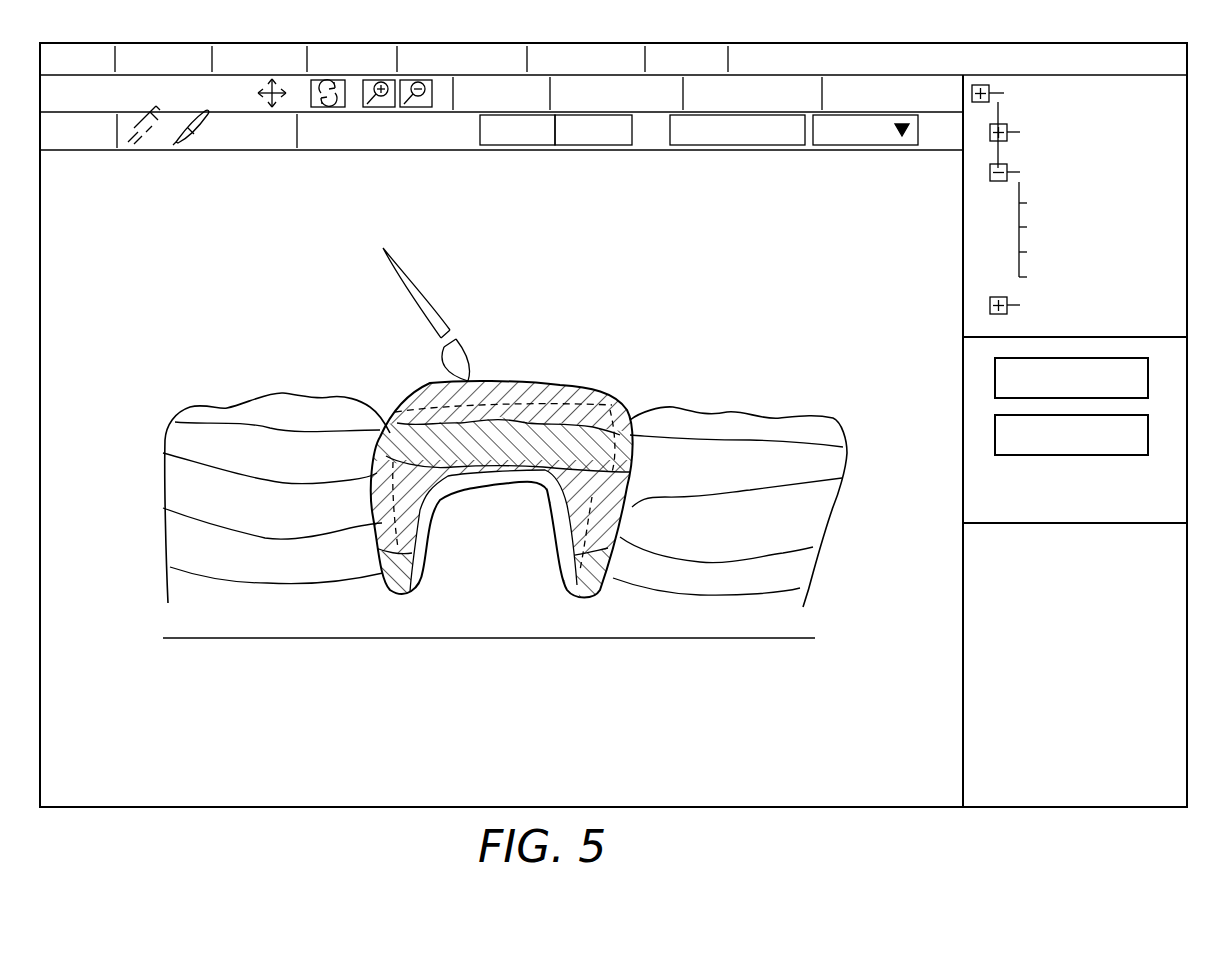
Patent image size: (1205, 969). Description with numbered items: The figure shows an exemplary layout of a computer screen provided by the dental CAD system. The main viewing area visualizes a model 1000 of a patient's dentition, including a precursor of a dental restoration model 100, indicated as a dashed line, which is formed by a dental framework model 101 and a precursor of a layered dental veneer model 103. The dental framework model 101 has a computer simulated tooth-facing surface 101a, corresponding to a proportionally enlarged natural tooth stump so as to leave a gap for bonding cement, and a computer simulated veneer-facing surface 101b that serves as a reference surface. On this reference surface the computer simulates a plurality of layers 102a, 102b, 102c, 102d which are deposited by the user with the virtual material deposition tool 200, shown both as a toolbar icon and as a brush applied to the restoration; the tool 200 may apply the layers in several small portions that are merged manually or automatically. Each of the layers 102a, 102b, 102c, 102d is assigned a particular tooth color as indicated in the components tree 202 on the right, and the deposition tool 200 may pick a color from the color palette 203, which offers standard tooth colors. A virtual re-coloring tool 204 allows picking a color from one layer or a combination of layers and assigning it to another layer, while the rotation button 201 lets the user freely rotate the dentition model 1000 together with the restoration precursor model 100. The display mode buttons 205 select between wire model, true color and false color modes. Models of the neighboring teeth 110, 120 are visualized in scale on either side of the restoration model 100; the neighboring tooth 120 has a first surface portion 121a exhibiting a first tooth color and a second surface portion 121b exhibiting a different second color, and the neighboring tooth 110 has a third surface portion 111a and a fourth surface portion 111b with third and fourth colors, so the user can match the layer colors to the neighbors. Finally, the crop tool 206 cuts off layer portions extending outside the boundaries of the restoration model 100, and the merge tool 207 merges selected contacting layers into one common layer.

The model of a patient's dentition 1000 is at (247, 612).
The dental restoration model 100 is at (553, 478).
The dental framework model 101 is at (562, 574).
The computer simulated tooth-facing surface 101a is at (428, 568).
The computer simulated veneer-facing surface 101b is at (393, 572).
The layer 102a is at (592, 585).
The layer 102b is at (632, 507).
The layer 102c is at (623, 507).
The layer 102d is at (603, 386).
The layered dental veneer model 103 is at (413, 412).
The neighboring tooth 110 is at (207, 407).
The third surface portion 111a is at (178, 547).
The fourth surface portion 111b is at (178, 481).
The neighboring tooth 120 is at (790, 413).
The first surface portion 121a is at (798, 573).
The second surface portion 121b is at (822, 513).
The virtual material deposition tool 200 is at (196, 138).
The rotation button 201 is at (330, 108).
The components tree 202 is at (978, 232).
The color palette 203 is at (978, 617).
The virtual re-coloring tool 204 is at (144, 148).
The display mode buttons 205 is at (661, 100).
The crop tool 206 is at (993, 375).
The merge tool 207 is at (993, 428).